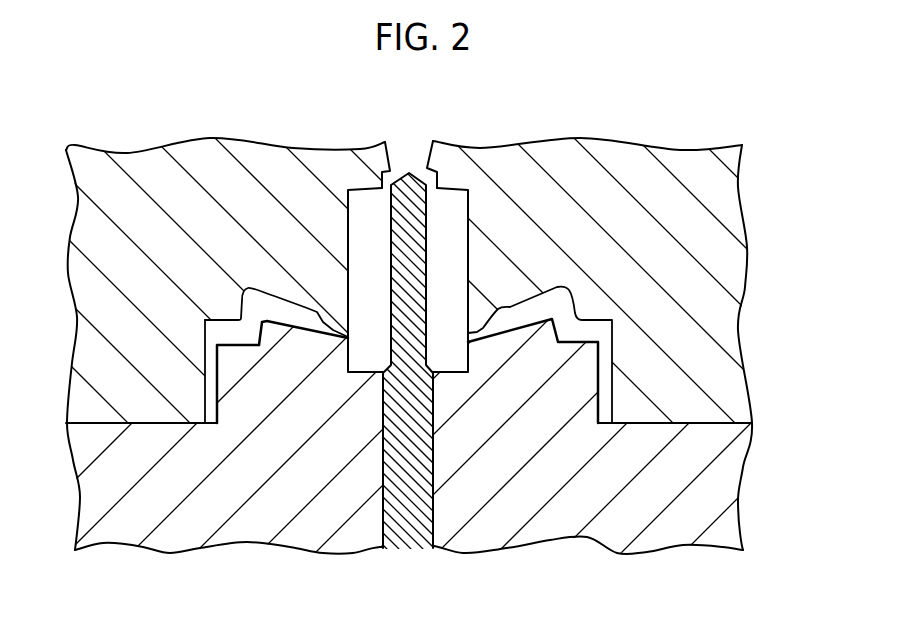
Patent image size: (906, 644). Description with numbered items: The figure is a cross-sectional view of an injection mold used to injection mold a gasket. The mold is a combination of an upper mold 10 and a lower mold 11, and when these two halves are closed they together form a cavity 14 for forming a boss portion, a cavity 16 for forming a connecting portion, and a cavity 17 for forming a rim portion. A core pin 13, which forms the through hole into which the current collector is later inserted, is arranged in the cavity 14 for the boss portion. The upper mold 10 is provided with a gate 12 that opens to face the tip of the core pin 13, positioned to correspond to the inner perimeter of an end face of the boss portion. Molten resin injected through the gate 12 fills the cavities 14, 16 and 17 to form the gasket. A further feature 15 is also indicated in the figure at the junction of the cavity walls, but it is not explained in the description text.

The upper mold (first mold half) 10 is at (625, 150).
The lower mold (second mold half) 11 is at (592, 533).
The gate opening 12 is at (407, 150).
The core pin 13 is at (410, 537).
The cavity 14 is at (453, 237).
The cavity edge junction 15 is at (350, 338).
The inclined clearance 16 is at (288, 320).
The vertical clearance 17 is at (210, 392).